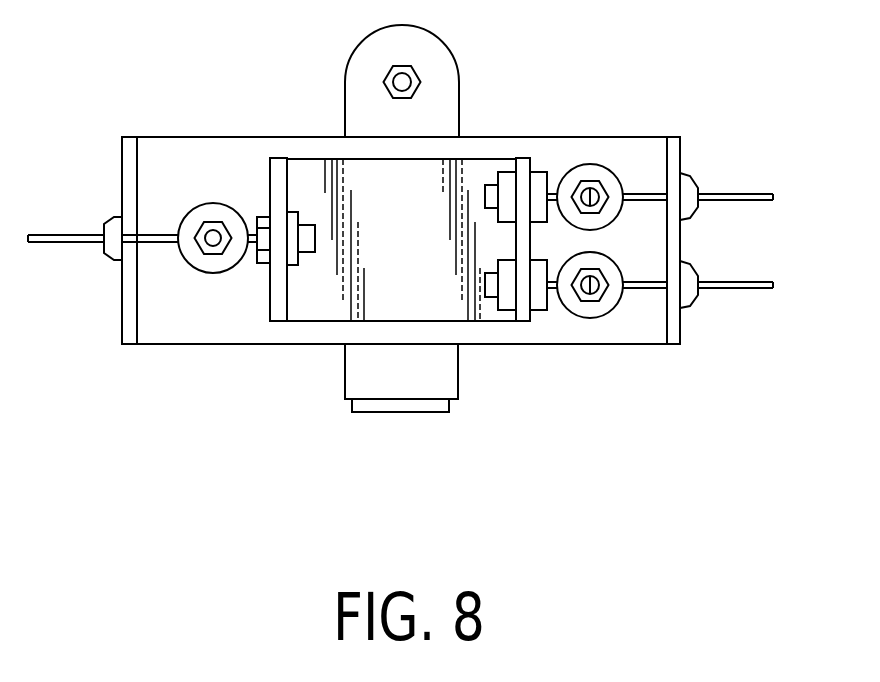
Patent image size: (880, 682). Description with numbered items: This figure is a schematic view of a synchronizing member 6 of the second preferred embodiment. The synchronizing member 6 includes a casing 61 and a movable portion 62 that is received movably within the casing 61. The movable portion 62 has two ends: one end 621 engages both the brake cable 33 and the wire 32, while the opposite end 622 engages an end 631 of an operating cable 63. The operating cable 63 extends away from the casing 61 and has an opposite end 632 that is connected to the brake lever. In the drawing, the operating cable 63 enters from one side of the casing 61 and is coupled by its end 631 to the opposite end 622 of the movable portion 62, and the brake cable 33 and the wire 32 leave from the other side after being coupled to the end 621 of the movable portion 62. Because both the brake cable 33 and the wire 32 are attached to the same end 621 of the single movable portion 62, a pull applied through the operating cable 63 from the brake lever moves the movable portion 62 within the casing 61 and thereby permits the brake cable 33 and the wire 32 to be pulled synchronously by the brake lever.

The synchronizing member 6 is at (552, 137).
The casing 61 is at (250, 146).
The movable portion 62 is at (432, 290).
The end 621 is at (527, 236).
The opposite end 622 is at (276, 280).
The operating cable 63 is at (78, 248).
The end 631 is at (172, 248).
The opposite end 632 is at (30, 232).
The wire 32 is at (745, 290).
The brake cable 33 is at (740, 193).